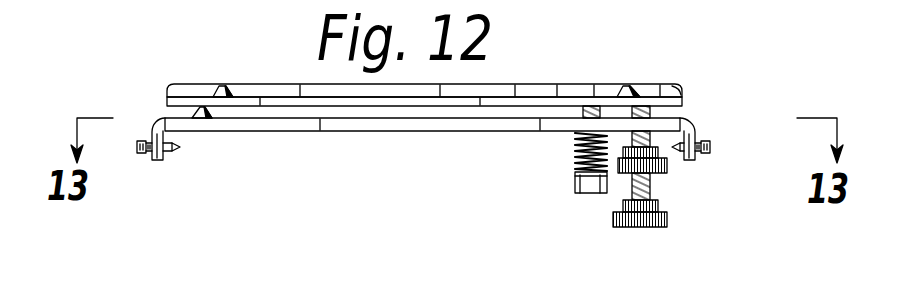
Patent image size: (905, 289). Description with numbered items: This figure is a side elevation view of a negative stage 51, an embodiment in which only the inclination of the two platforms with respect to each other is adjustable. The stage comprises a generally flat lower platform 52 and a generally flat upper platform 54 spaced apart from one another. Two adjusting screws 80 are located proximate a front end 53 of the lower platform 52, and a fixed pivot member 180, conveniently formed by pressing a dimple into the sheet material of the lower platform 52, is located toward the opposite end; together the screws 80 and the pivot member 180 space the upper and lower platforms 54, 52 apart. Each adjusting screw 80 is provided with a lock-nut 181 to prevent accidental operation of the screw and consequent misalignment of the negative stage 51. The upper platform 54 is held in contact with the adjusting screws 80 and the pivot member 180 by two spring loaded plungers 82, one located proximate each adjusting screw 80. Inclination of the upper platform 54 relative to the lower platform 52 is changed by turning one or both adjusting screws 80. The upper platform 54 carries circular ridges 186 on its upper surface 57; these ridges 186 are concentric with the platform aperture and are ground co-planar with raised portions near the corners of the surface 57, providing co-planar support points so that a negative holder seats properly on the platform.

The negative stage 51 is at (112, 219).
The lower platform 52 is at (710, 130).
The front end of lower platform 53 is at (682, 118).
The upper platform 54 is at (690, 102).
The upper surface of upper platform 57 is at (669, 84).
The adjusting screw 80 is at (663, 188).
The spring loaded plunger 82 is at (555, 160).
The pivot member 180 is at (184, 113).
The lock-nut 181 is at (672, 170).
The circular ridges 186 is at (193, 90).